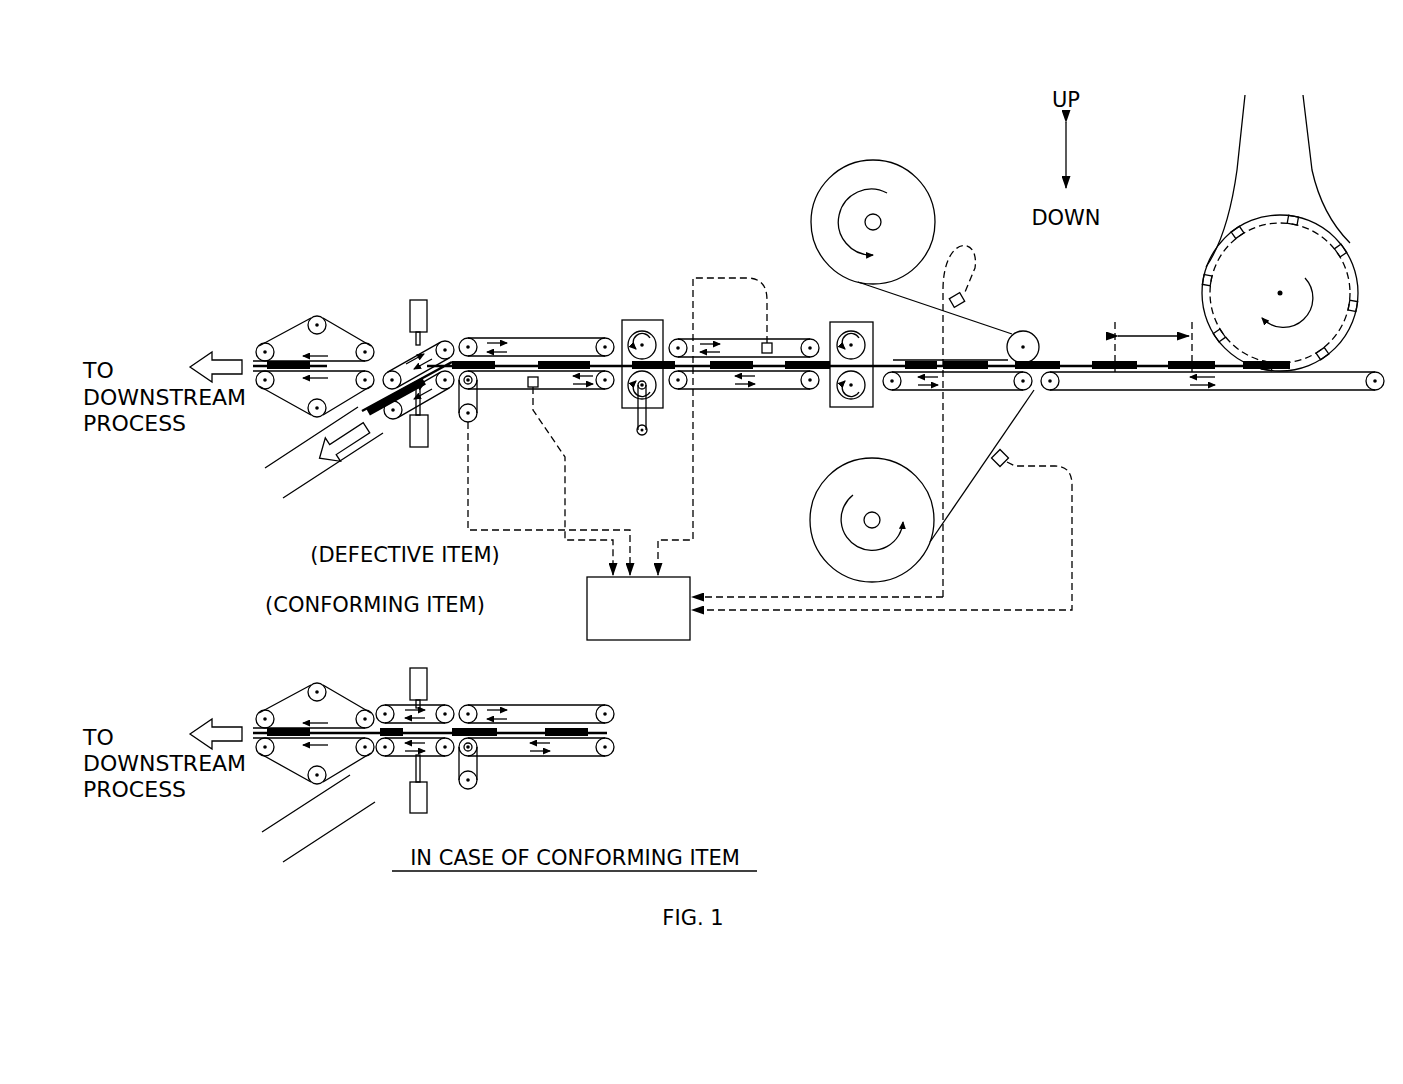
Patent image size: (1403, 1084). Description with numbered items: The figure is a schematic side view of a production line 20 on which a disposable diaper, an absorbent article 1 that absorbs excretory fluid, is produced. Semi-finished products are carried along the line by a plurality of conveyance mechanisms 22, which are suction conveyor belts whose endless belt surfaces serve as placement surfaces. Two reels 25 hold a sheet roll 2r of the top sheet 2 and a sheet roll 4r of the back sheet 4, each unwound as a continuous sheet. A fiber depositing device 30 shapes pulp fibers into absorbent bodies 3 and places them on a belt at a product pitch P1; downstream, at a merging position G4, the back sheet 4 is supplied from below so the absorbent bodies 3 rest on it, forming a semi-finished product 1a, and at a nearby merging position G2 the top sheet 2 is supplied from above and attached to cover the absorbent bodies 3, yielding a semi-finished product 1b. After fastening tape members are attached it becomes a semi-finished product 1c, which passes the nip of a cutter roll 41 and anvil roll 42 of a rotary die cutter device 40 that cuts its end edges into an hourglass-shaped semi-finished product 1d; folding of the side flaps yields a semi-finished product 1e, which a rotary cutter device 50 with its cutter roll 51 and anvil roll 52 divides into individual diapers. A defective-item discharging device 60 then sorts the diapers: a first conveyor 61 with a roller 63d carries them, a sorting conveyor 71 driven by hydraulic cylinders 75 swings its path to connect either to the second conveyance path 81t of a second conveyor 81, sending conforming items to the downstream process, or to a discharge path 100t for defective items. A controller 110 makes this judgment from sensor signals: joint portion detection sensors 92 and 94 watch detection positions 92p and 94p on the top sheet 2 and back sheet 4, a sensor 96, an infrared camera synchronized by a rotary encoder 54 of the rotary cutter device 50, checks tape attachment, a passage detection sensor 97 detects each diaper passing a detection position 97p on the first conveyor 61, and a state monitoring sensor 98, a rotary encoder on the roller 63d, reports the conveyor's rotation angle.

The production line 20 is at (517, 135).
The defective-item discharging device 60 is at (469, 263).
The hydraulic cylinder 75 is at (418, 300).
The sorting conveyor 71 is at (435, 333).
The absorbent article 1 is at (300, 362).
The second conveyor 81 is at (350, 318).
The second conveyance path 81t is at (378, 362).
The detection position 97p is at (534, 352).
The first conveyor 61 is at (596, 332).
The roller 63d is at (488, 397).
The state monitoring sensor 98 is at (470, 423).
The passage detection sensor 97 is at (540, 393).
The rotary cutter device 50 is at (645, 315).
The cutter roll 51 is at (656, 340).
The anvil roll 52 is at (655, 397).
The rotary encoder 54 is at (646, 440).
The semi-finished product 1e is at (730, 360).
The semi-finished product 1d is at (795, 360).
The semi-finished product 1c is at (905, 360).
The semi-finished product 1b is at (1010, 360).
The semi-finished product 1a is at (1040, 360).
The sensor 96 is at (762, 343).
The rotary die cutter device 40 is at (857, 315).
The cutter roll 41 is at (866, 345).
The anvil roll 42 is at (866, 398).
The conveyance mechanism 22 is at (278, 402).
The top sheet 2 is at (992, 325).
The sheet roll 2r is at (822, 232).
The reel 25 is at (880, 220).
The sheet roll 4r is at (835, 555).
The back sheet 4 is at (1028, 418).
The merging position G4 is at (1041, 396).
The merging position G2 is at (1031, 322).
The detection position 92p is at (985, 372).
The detection position 94p is at (984, 450).
The joint portion detection sensor 92 is at (968, 292).
The joint portion detection sensor 94 is at (1000, 468).
The absorbent body 3 is at (1105, 360).
The product pitch P1 is at (1153, 344).
The fiber depositing device 30 is at (1205, 266).
The discharge path 100t is at (370, 434).
The controller 110 is at (648, 640).